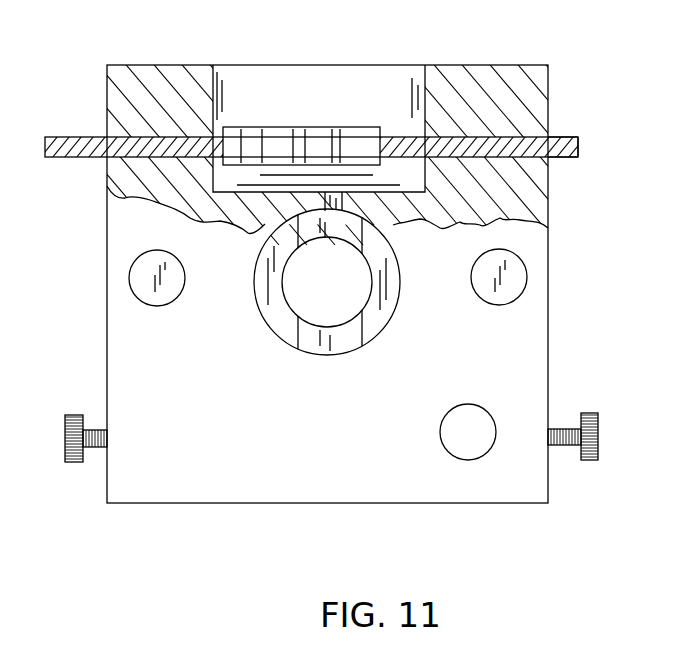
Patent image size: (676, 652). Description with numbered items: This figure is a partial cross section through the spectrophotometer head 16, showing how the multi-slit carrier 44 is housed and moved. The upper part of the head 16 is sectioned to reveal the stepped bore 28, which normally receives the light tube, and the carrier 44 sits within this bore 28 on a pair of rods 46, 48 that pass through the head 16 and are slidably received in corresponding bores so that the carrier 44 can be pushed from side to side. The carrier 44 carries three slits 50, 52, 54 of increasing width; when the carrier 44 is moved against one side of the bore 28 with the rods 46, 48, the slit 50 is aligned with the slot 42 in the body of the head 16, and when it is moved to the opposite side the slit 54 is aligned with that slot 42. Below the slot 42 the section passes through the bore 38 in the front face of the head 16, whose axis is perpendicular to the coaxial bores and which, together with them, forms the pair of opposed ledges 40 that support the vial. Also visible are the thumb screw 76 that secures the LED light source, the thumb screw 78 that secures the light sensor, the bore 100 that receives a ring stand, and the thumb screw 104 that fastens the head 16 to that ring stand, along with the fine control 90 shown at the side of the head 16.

The spectrophotometer head 16 is at (373, 518).
The stepped bore 28 is at (214, 102).
The bore 38 is at (358, 332).
The ledges 40 is at (279, 322).
The slot 42 is at (333, 209).
The multi-slit carrier 44 is at (364, 118).
The rod 46 is at (570, 158).
The rod 48 is at (62, 160).
The slit 50 is at (334, 127).
The slit 52 is at (299, 128).
The slit 54 is at (256, 128).
The thumb screw 76 is at (510, 288).
The thumb screw 78 is at (137, 283).
The fine control 90 is at (65, 438).
The bore 100 is at (487, 430).
The thumb screw 104 is at (590, 448).